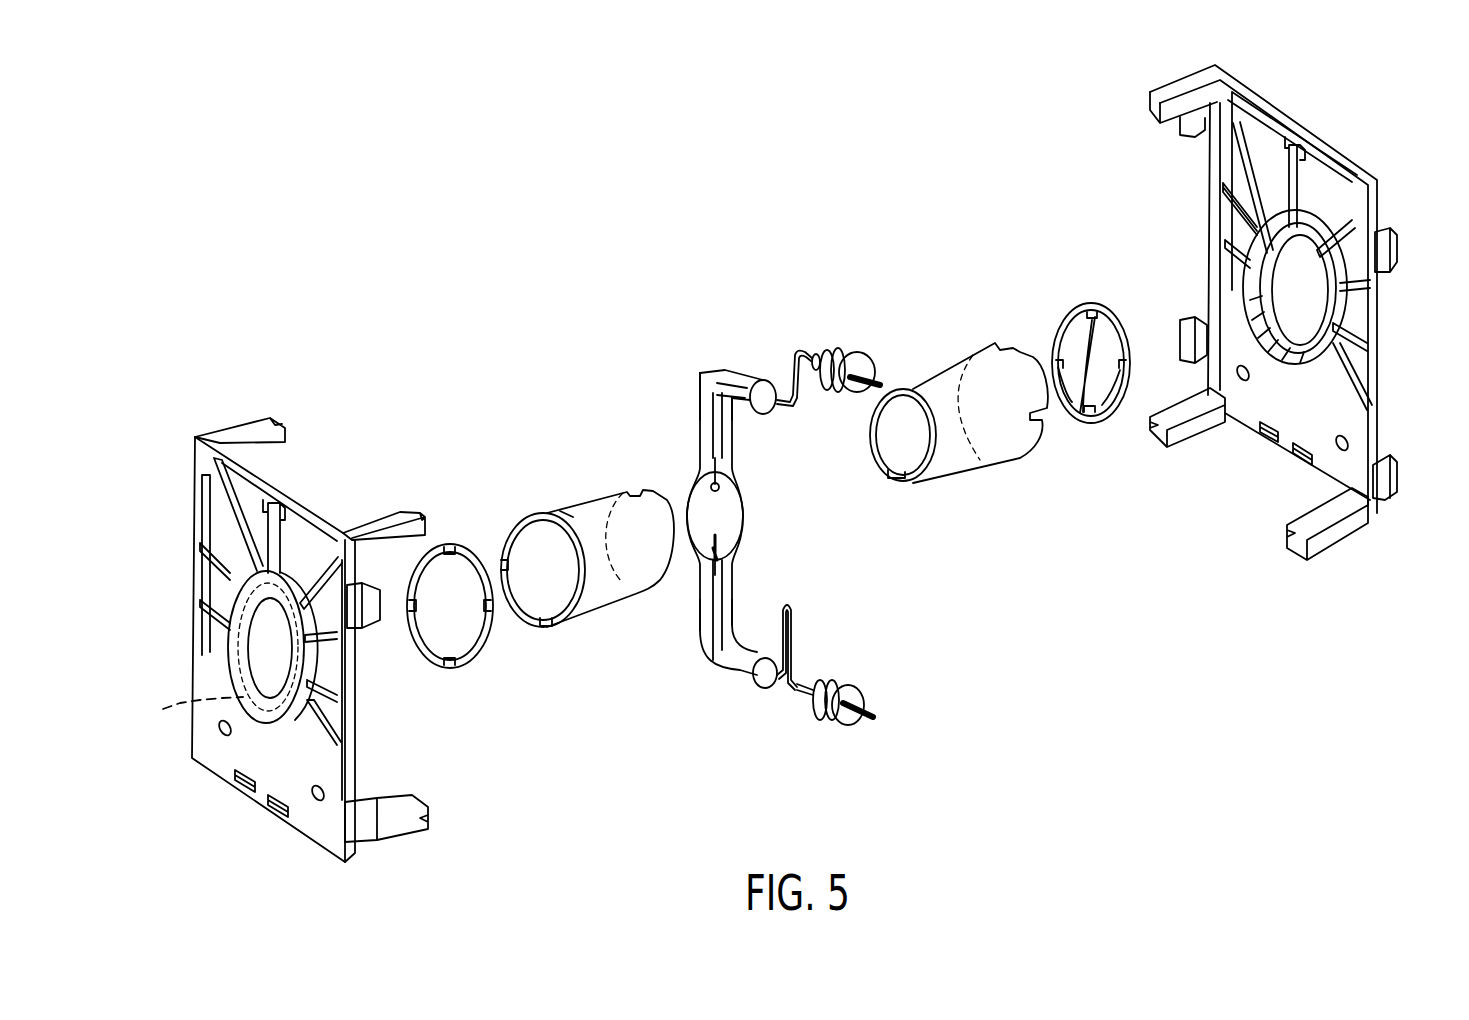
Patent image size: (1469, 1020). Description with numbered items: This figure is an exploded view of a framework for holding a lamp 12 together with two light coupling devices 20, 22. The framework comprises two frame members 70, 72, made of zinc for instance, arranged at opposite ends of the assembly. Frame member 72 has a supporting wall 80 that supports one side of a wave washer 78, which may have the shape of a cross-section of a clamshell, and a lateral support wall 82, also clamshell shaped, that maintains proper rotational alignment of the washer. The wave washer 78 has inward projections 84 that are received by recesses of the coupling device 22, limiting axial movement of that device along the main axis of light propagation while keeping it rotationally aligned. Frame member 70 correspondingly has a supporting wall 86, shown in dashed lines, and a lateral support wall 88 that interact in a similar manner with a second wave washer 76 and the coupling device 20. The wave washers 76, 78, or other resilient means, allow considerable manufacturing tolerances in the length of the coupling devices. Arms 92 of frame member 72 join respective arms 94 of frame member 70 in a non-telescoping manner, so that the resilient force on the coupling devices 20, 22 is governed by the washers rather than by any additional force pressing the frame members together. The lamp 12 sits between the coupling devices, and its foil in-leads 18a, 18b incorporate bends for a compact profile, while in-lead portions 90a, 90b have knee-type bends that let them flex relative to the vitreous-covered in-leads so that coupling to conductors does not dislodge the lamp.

The lamp 12 is at (737, 518).
The foil in-lead 18a is at (728, 378).
The foil in-lead 18b is at (720, 650).
The coupling device 20 is at (550, 478).
The coupling device 22 is at (985, 487).
The frame member 70 is at (288, 641).
The frame member 72 is at (1309, 328).
The wave washer 76 is at (457, 668).
The wave washer 78 is at (1076, 382).
The supporting wall 80 is at (1262, 286).
The lateral support wall 82 is at (1328, 357).
The inward projections 84 is at (1062, 398).
The supporting wall 86 is at (243, 675).
The lateral support wall 88 is at (188, 710).
The in-lead portion 90a is at (847, 345).
The in-lead portion 90b is at (827, 748).
The arms 92 is at (1160, 445).
The arms 94 is at (377, 515).